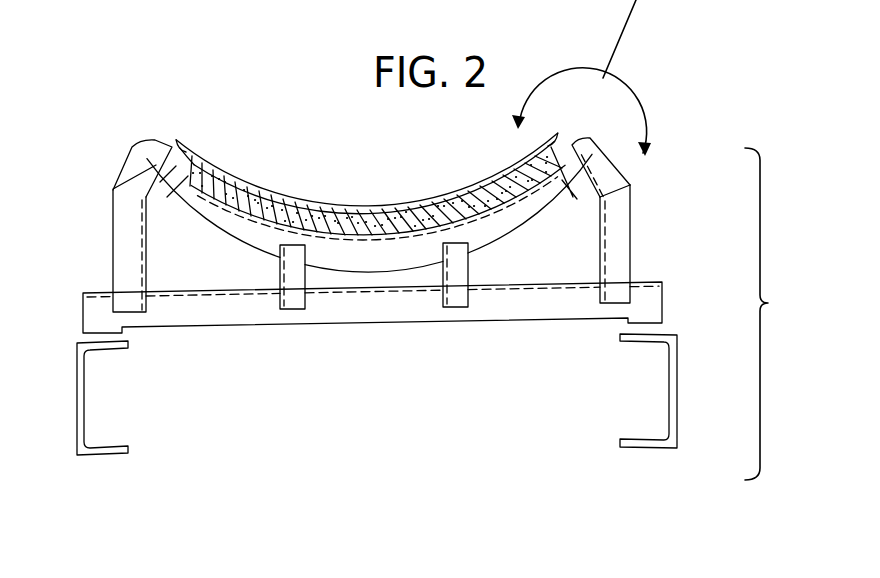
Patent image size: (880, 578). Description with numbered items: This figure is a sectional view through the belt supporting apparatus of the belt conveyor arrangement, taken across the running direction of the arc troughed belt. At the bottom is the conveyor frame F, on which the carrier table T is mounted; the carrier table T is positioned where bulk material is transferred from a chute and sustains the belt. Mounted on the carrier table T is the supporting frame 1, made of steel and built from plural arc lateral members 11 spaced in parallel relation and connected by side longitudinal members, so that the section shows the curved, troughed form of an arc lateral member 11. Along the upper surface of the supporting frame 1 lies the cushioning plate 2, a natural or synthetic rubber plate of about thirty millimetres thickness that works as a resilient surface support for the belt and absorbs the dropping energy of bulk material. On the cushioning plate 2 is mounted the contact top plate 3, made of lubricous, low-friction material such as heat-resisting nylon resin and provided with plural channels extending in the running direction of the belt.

The supporting frame 1 is at (397, 235).
The cushioning plate 2 is at (368, 182).
The contact top plate 3 is at (298, 192).
The arc lateral member 11 is at (513, 217).
The carrier table T is at (113, 253).
The conveyor frame F is at (678, 417).